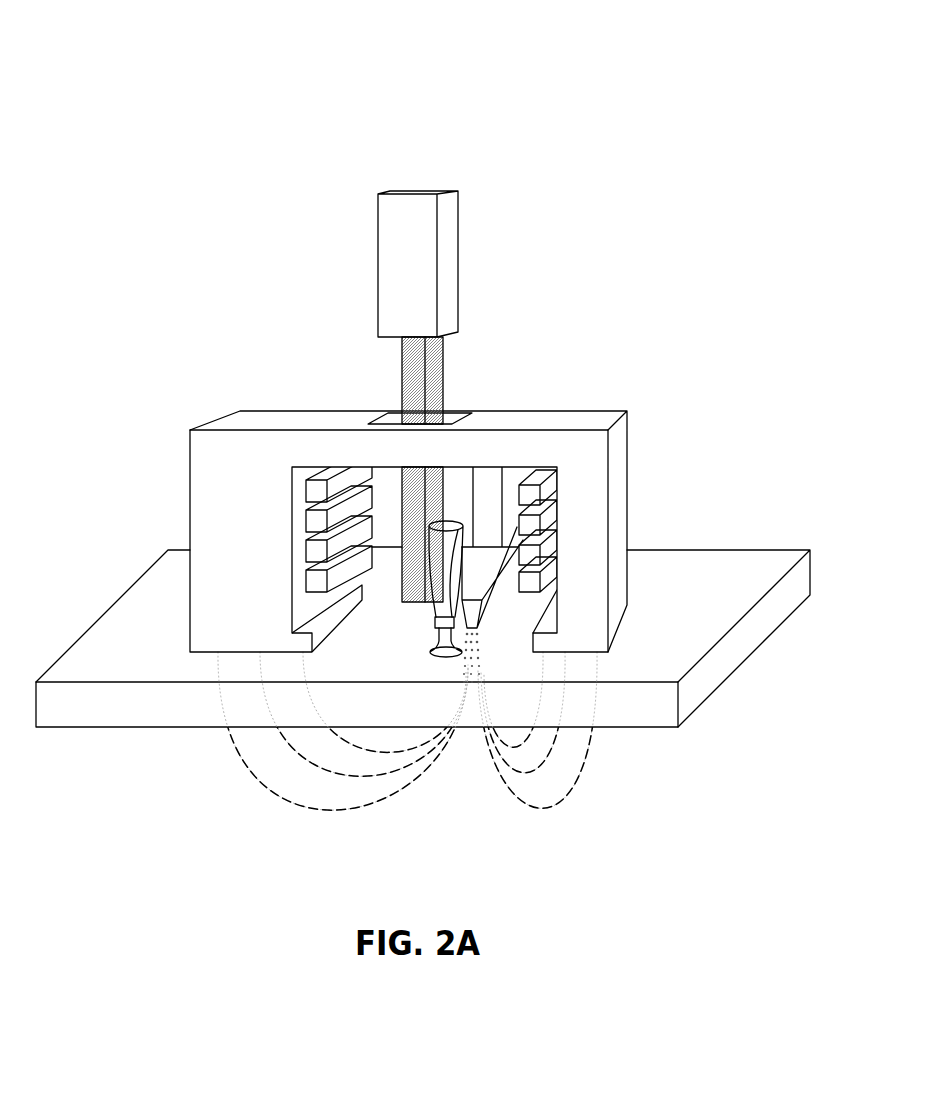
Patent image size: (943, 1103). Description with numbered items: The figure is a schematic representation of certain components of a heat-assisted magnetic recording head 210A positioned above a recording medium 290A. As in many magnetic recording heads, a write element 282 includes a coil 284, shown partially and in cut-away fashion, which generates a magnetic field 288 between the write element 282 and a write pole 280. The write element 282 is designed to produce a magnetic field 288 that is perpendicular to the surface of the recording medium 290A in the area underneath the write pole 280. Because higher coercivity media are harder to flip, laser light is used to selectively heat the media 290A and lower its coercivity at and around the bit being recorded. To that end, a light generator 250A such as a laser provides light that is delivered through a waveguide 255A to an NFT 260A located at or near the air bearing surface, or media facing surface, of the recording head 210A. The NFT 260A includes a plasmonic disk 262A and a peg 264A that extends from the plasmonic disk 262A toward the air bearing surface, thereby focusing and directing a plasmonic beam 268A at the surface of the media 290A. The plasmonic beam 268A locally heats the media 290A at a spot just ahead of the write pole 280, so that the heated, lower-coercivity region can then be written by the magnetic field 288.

The HAMR recording head 210A is at (538, 88).
The light generator 250A is at (458, 257).
The waveguide 255A is at (443, 370).
The plasmonic disk 262A is at (435, 560).
The write pole 280 is at (472, 590).
The coil 284 is at (545, 517).
The write element 282 is at (598, 540).
The NFT 260A is at (417, 613).
The plasmonic beam 268A is at (440, 643).
The peg 264A is at (433, 626).
The recording medium 290A is at (696, 692).
The magnetic field 288 is at (500, 775).